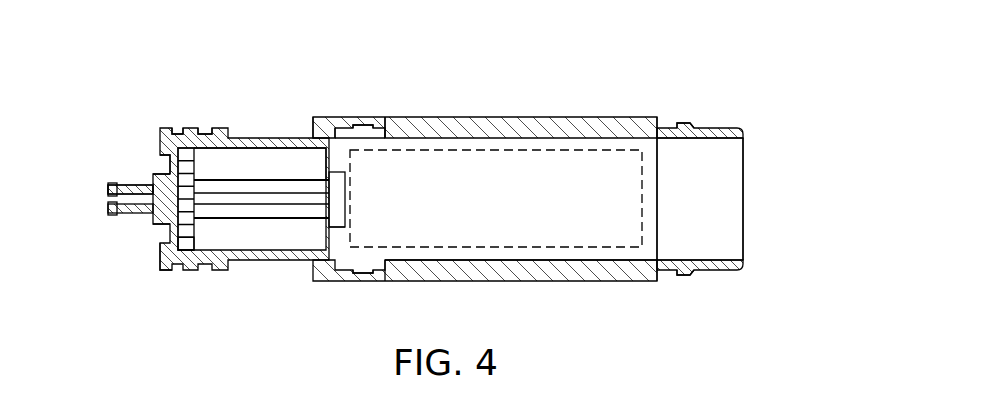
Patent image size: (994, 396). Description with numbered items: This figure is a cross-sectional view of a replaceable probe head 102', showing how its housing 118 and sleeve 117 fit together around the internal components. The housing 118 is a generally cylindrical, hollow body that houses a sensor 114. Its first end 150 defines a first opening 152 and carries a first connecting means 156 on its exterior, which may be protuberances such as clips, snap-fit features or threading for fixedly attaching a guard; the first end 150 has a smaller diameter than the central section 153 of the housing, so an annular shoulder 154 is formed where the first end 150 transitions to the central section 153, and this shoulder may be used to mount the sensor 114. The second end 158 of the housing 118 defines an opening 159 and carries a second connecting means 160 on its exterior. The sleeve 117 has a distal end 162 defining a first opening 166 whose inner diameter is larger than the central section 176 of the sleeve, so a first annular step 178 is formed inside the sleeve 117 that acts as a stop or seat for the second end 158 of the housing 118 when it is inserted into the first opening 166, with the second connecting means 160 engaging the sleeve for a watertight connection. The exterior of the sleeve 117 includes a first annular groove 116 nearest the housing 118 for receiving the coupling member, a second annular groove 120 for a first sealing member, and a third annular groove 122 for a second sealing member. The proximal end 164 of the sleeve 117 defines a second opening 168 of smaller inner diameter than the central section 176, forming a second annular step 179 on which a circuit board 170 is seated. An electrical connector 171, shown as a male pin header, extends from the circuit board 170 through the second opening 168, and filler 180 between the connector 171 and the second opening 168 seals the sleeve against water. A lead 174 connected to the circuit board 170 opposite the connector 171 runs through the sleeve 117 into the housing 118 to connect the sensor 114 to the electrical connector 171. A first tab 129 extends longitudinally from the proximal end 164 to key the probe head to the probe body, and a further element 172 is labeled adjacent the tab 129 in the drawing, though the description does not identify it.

The replaceable probe head 102' is at (425, 140).
The sensor 114 is at (600, 237).
The first annular groove 116 is at (247, 138).
The sleeve 117 is at (313, 118).
The housing 118 is at (505, 118).
The second annular groove 120 is at (205, 137).
The third annular groove 122 is at (172, 137).
The first tab 129 is at (108, 199).
The first end of housing 150 is at (733, 128).
The first opening 152 is at (743, 170).
The central section of housing 153 is at (562, 130).
The annular shoulder 154 is at (657, 128).
The first connecting means 156 is at (677, 127).
The second end of housing 158 is at (392, 138).
The opening in second end 159 is at (331, 246).
The second connecting means 160 is at (365, 139).
The distal end of sleeve 162 is at (372, 127).
The proximal end of sleeve 164 is at (162, 270).
The first opening of sleeve 166 is at (390, 262).
The second opening of sleeve 168 is at (166, 233).
The circuit board 170 is at (192, 243).
The electrical connector 171 is at (160, 207).
The upper lead 172 is at (140, 186).
The lead 174 is at (286, 219).
The central section of sleeve 176 is at (238, 150).
The first annular step 178 is at (332, 137).
The second annular step 179 is at (185, 251).
The filler 180 is at (164, 160).